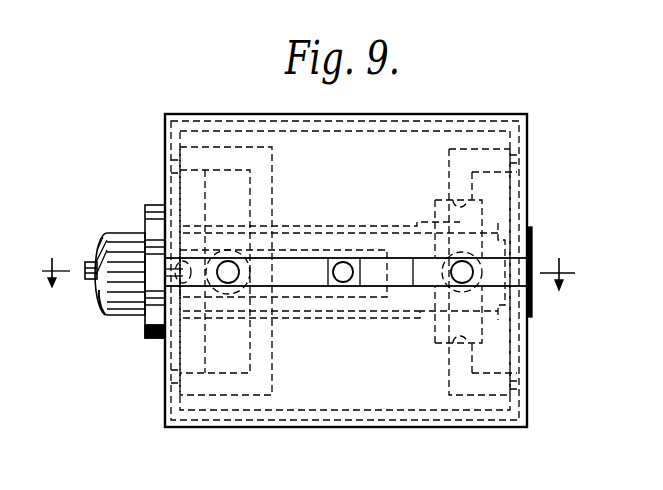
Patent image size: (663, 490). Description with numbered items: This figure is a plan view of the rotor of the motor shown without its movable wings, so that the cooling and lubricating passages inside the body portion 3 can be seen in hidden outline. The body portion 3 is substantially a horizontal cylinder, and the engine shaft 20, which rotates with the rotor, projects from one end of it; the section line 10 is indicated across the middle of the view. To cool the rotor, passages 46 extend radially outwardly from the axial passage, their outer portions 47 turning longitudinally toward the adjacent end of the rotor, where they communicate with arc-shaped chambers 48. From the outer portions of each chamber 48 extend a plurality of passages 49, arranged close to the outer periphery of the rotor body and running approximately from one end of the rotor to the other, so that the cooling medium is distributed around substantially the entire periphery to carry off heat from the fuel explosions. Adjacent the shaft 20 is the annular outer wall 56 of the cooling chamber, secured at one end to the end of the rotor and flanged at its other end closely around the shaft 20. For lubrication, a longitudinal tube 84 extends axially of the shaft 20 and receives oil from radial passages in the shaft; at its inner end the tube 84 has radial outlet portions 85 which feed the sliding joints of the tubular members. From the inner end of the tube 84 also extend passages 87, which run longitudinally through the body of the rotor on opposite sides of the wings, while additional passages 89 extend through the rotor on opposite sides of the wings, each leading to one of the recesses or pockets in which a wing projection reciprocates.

The body portion 3 is at (410, 388).
The section line 10 is at (312, 274).
The engine shaft 20 is at (120, 245).
The passages 46 is at (270, 190).
The outer portions of the passages 47 is at (205, 160).
The arc-shaped chambers 48 is at (175, 165).
The passages 49 is at (455, 147).
The annular outer wall 56 is at (148, 340).
The longitudinal tube 84 is at (85, 285).
The radial outlet portions 85 is at (183, 302).
The passages 87 is at (375, 220).
The passages 89 is at (315, 250).